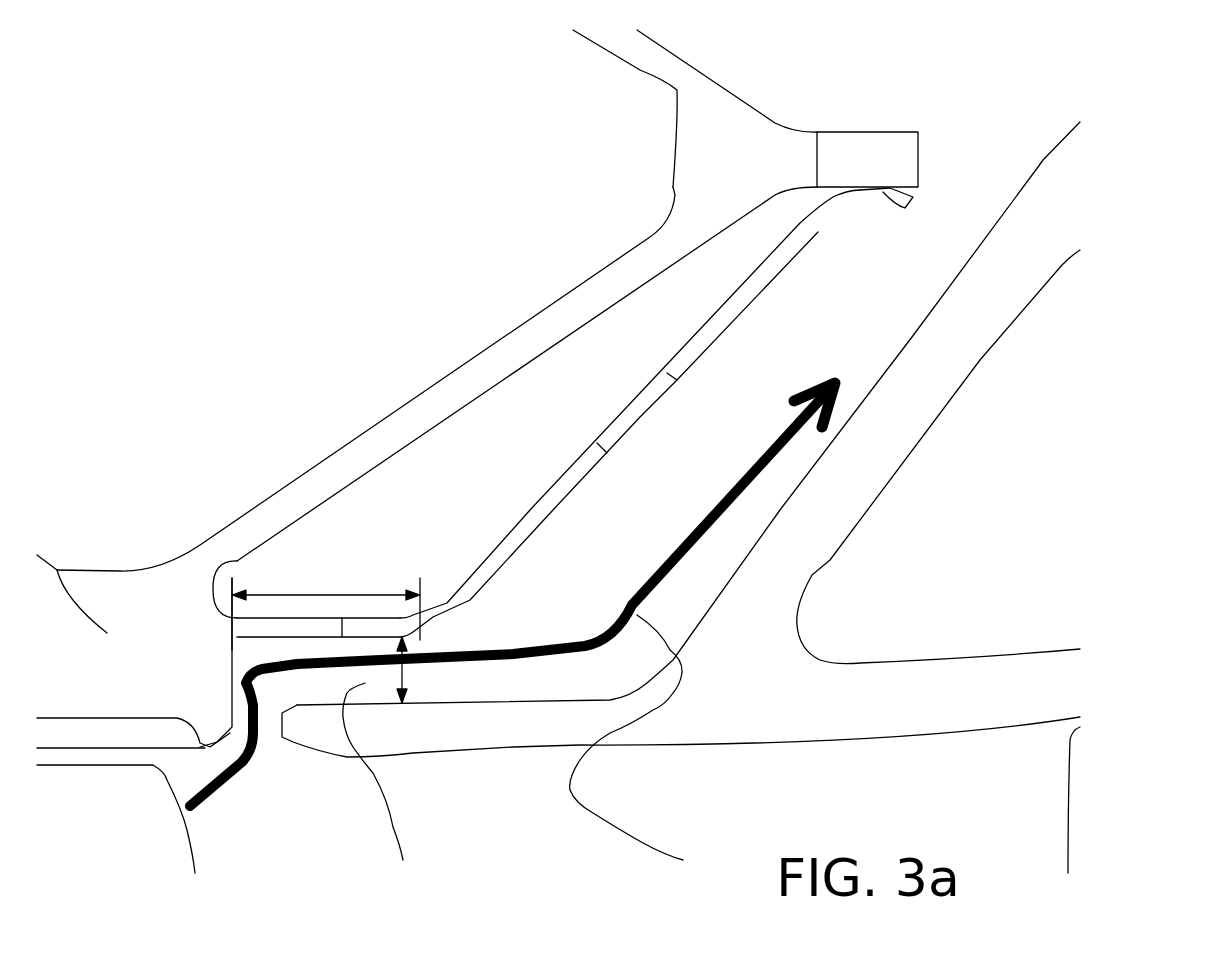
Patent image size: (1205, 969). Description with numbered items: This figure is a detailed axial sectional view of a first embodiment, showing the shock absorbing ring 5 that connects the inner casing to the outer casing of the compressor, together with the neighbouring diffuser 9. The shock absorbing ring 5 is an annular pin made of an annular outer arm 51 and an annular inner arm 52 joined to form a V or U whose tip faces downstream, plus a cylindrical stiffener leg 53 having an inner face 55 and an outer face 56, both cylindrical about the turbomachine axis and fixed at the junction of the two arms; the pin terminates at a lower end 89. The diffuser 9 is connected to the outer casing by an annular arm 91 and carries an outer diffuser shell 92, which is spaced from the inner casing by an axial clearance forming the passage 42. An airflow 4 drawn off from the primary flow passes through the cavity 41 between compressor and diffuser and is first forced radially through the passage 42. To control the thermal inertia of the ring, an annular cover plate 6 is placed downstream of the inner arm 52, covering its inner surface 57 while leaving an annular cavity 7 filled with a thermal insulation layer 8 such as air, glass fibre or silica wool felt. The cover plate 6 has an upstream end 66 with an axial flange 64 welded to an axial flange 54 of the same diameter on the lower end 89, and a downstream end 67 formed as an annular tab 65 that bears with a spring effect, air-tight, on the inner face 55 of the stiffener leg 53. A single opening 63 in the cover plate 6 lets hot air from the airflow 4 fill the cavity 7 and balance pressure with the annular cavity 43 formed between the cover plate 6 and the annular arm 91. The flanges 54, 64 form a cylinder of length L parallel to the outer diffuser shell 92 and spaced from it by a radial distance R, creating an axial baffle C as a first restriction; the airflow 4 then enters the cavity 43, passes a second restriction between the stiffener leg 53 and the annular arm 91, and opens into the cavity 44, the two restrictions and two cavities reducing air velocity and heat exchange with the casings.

The airflow 4 is at (512, 621).
The shock absorbing ring 5 is at (257, 523).
The annular cover plate 6 is at (553, 503).
The annular cavity 7 is at (527, 445).
The thermal insulation layer 8 is at (400, 492).
The diffuser 9 is at (983, 810).
The cavity 41 is at (164, 795).
The passage 42 is at (267, 722).
The annular cavity 43 is at (619, 522).
The cavity 44 is at (930, 73).
The annular outer arm 51 is at (673, 120).
The annular inner arm 52 is at (487, 367).
The cylindrical stiffener leg 53 is at (823, 163).
The axial flange 54 is at (280, 625).
The inner face 55 is at (905, 208).
The outer face 56 is at (873, 132).
The inner surface 57 is at (587, 323).
The opening 63 is at (655, 403).
The axial flange 64 is at (457, 600).
The annular tab 65 is at (860, 198).
The upstream end 66 is at (507, 547).
The downstream end 67 is at (818, 223).
The lower end 89 is at (57, 570).
The annular arm 91 is at (847, 490).
The outer diffuser shell 92 is at (922, 705).
The length L is at (326, 599).
The radial distance R is at (424, 670).
The axial baffle C is at (367, 757).